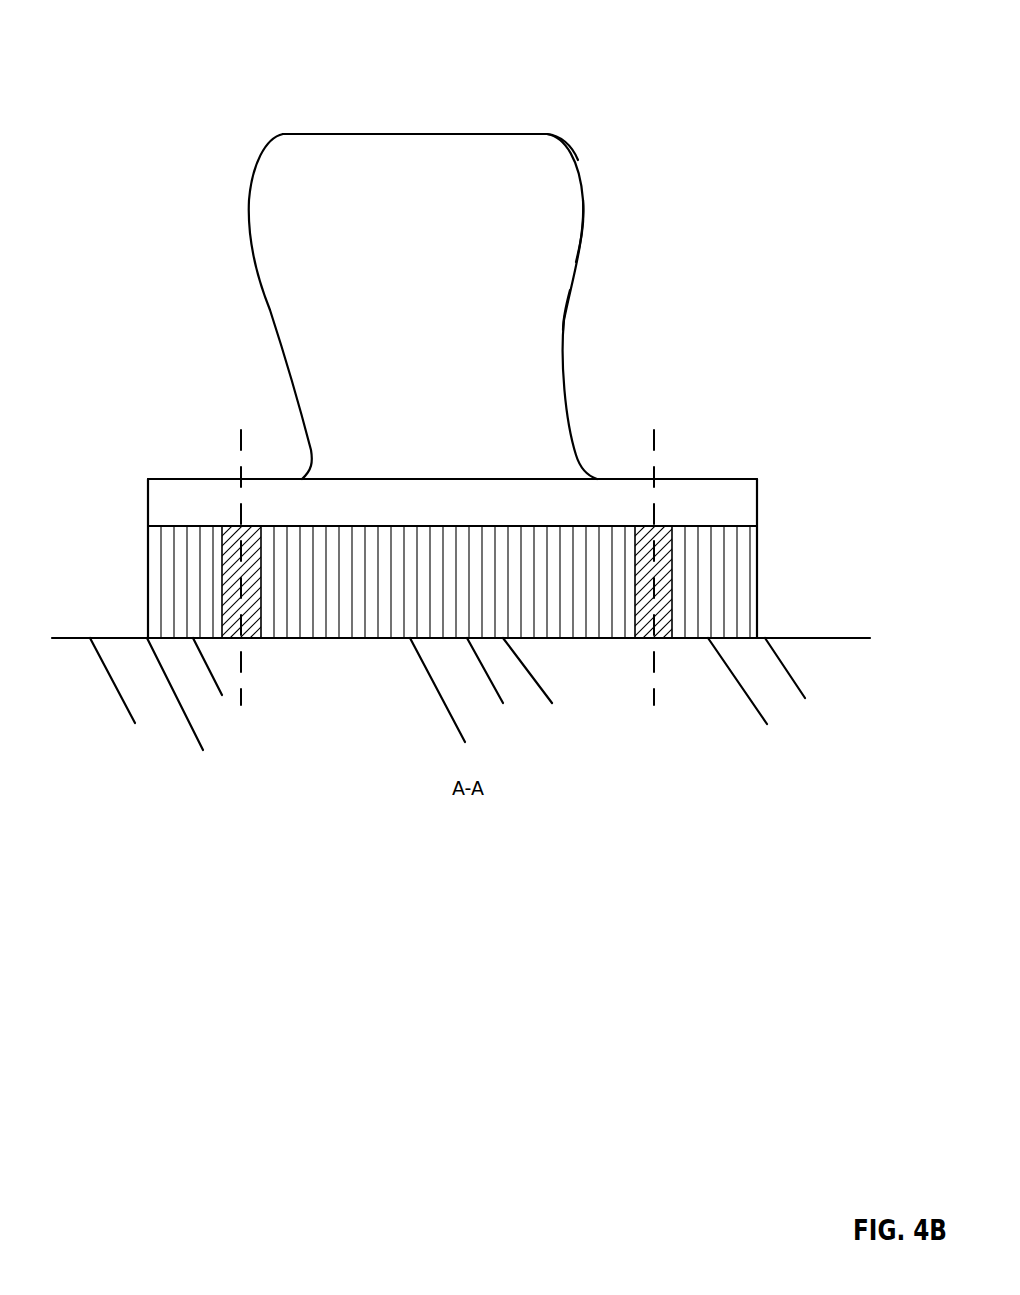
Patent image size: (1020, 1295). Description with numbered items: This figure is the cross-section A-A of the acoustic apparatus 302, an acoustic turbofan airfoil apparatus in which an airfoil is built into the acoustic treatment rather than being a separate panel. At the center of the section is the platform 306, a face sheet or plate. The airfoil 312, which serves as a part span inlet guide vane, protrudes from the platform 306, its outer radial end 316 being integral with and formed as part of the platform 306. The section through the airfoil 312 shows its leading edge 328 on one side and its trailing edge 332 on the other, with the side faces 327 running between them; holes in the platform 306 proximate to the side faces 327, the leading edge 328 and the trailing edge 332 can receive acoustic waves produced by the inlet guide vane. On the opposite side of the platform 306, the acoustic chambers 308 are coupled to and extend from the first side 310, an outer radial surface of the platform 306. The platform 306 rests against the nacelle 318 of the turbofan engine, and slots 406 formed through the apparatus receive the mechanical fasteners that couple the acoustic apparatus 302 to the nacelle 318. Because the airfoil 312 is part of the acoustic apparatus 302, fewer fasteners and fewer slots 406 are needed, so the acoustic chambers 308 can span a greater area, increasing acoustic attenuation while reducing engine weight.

The acoustic apparatus 302 is at (616, 44).
The airfoil 312 is at (578, 160).
The leading edge 328 is at (250, 197).
The trailing edge 332 is at (578, 250).
The side faces 327 is at (540, 325).
The outer radial end 316 is at (705, 479).
The platform 306 is at (757, 500).
The first side 310 is at (180, 527).
The slots 406 is at (676, 600).
The nacelle 318 is at (822, 638).
The acoustic chambers 308 is at (370, 612).